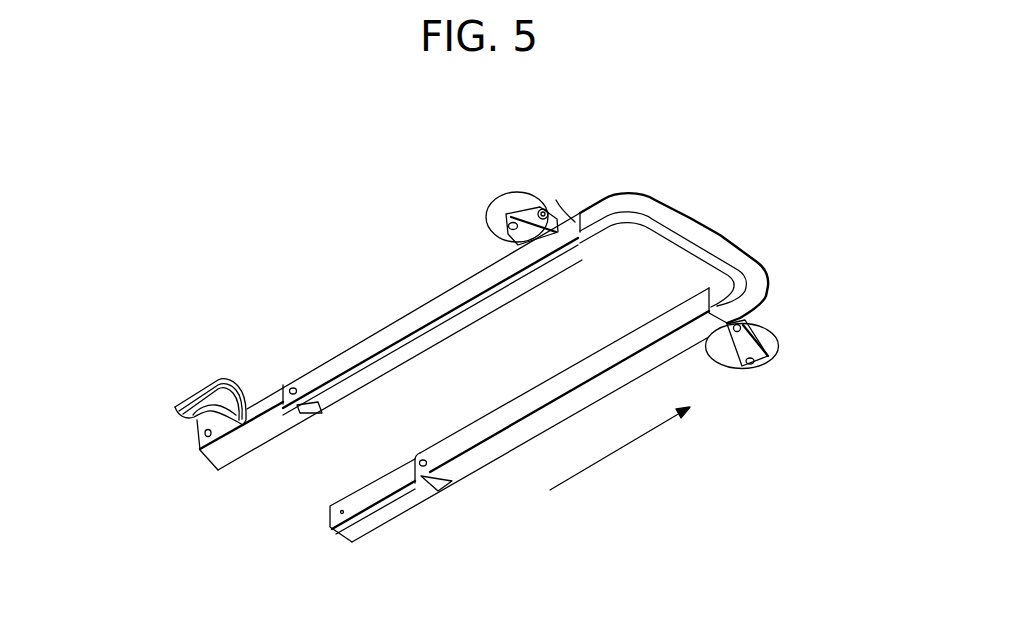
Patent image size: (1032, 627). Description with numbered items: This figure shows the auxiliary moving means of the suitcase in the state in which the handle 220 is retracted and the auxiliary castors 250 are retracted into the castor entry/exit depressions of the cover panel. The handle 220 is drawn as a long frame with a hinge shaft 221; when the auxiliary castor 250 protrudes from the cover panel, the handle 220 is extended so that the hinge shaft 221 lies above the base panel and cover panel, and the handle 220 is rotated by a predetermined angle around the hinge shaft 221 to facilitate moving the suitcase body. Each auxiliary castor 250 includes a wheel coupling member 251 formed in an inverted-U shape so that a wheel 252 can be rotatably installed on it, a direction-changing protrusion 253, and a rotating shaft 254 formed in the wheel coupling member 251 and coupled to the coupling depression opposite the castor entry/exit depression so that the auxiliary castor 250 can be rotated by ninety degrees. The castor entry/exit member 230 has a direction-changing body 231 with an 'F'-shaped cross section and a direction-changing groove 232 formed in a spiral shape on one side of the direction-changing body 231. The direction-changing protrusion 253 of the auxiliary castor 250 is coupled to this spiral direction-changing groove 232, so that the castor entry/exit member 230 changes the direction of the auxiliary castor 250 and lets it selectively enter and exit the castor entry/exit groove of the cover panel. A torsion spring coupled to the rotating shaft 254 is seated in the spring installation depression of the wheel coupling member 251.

The handle 220 is at (700, 213).
The hinge shaft 221 is at (413, 462).
The castor entry/exit member 230 is at (144, 364).
The direction-changing body 231 is at (238, 386).
The direction-changing groove 232 is at (193, 428).
The auxiliary castor 250 is at (603, 295).
The wheel coupling member 251 is at (520, 240).
The wheel 252 is at (503, 192).
The direction-changing protrusion 253 is at (558, 200).
The rotating shaft 254 is at (708, 211).